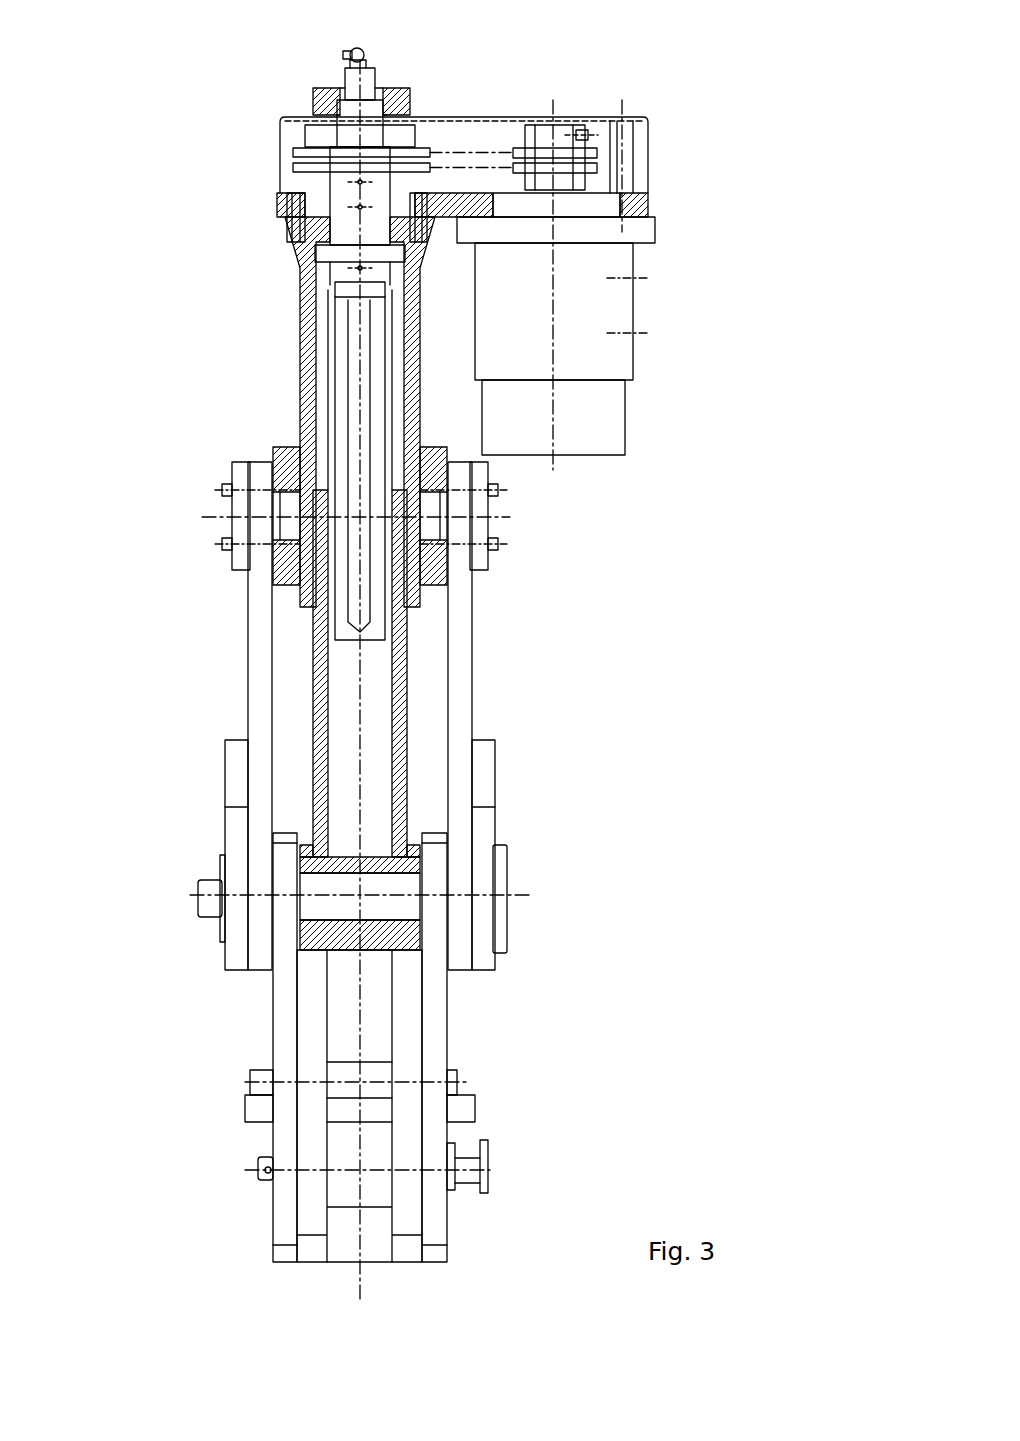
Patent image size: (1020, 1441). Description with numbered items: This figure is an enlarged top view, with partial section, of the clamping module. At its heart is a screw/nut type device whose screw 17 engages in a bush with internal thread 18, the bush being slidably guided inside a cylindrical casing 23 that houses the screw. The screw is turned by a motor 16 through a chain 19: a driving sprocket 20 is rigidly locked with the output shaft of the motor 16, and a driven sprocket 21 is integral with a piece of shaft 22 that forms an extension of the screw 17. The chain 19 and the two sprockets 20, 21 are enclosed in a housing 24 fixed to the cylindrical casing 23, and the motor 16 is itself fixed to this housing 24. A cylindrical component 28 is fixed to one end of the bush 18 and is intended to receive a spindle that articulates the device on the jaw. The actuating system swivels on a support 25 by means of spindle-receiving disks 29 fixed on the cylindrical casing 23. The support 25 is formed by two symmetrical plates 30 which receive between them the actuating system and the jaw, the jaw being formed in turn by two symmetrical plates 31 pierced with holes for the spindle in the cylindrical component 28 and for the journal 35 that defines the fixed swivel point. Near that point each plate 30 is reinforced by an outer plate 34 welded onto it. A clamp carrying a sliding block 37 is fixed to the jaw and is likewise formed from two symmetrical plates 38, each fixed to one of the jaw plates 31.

The motor 16 is at (615, 305).
The screw 17 is at (375, 618).
The bush with internal thread 18 is at (313, 678).
The chain 19 is at (480, 150).
The driving sprocket 20 is at (562, 152).
The driven sprocket 21 is at (298, 145).
The piece of shaft 22 is at (343, 182).
The cylindrical casing 23 is at (307, 355).
The housing 24 is at (397, 90).
The support 25 is at (487, 708).
The cylindrical component 28 is at (403, 952).
The spindle-receiving disks 29 is at (280, 455).
The plates 30 is at (260, 613).
The plates 31 is at (287, 1028).
The outer plate 34 is at (238, 828).
The journal 35 is at (207, 907).
The sliding block 37 is at (457, 1112).
The plates 38 is at (400, 1222).